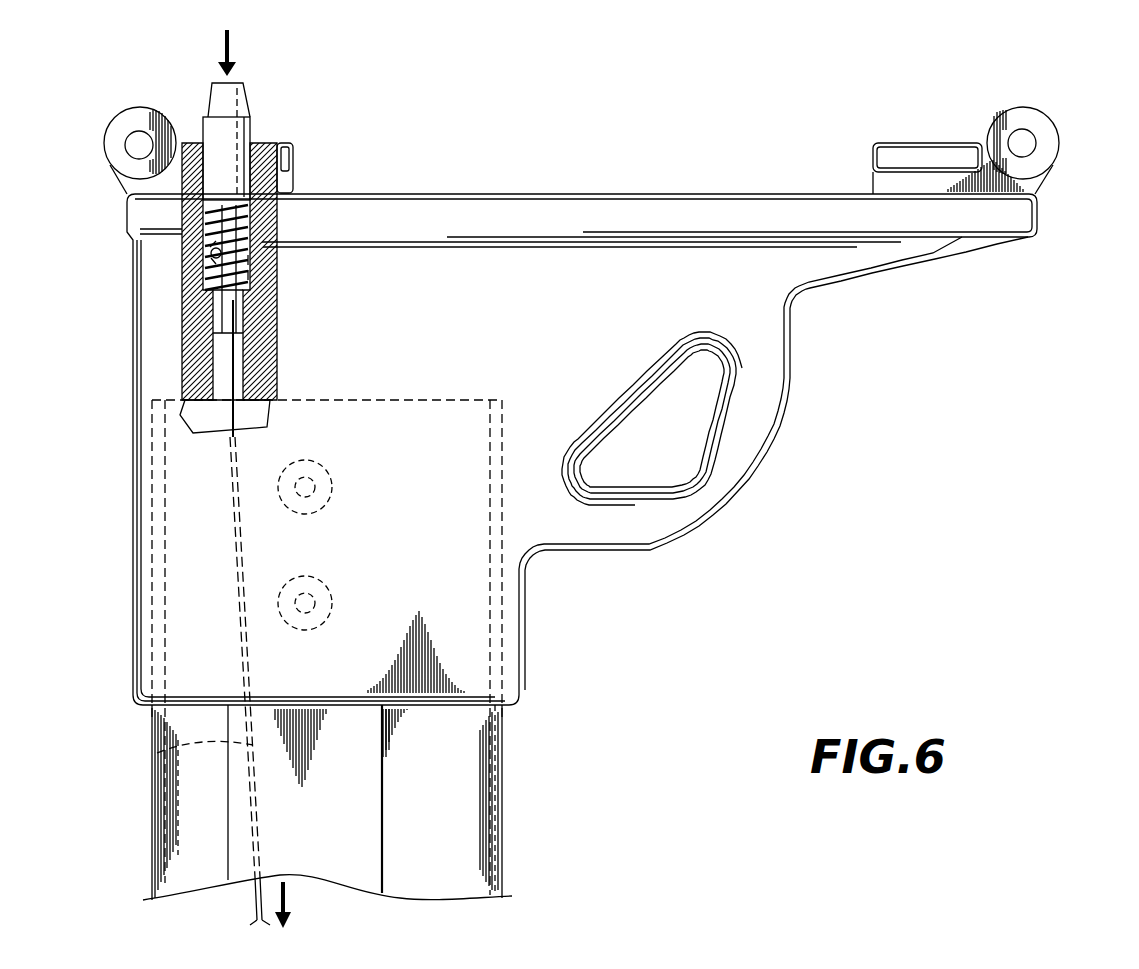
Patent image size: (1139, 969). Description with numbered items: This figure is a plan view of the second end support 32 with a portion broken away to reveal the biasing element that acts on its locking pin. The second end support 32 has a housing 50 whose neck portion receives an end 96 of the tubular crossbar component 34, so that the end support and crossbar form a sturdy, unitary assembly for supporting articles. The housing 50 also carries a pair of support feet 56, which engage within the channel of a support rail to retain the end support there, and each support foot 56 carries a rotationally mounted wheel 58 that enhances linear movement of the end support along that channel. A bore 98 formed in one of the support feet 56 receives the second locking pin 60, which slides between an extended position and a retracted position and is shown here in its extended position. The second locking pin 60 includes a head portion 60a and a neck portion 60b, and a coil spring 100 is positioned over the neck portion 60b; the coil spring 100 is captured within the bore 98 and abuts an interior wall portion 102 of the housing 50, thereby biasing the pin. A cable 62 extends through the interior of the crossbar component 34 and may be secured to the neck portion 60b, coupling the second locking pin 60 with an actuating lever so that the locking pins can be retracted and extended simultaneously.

The second end support 32 is at (766, 535).
The tubular crossbar component 34 is at (148, 802).
The housing 50 is at (744, 287).
The support feet 56 is at (262, 143).
The wheel 58 is at (112, 130).
The second locking pin 60 is at (203, 118).
The head portion 60a is at (213, 97).
The neck portion 60b is at (222, 322).
The cable 62 is at (157, 752).
The end of the crossbar component 96 is at (455, 790).
The bore 98 is at (217, 258).
The coil spring 100 is at (256, 262).
The interior wall portion 102 is at (251, 273).